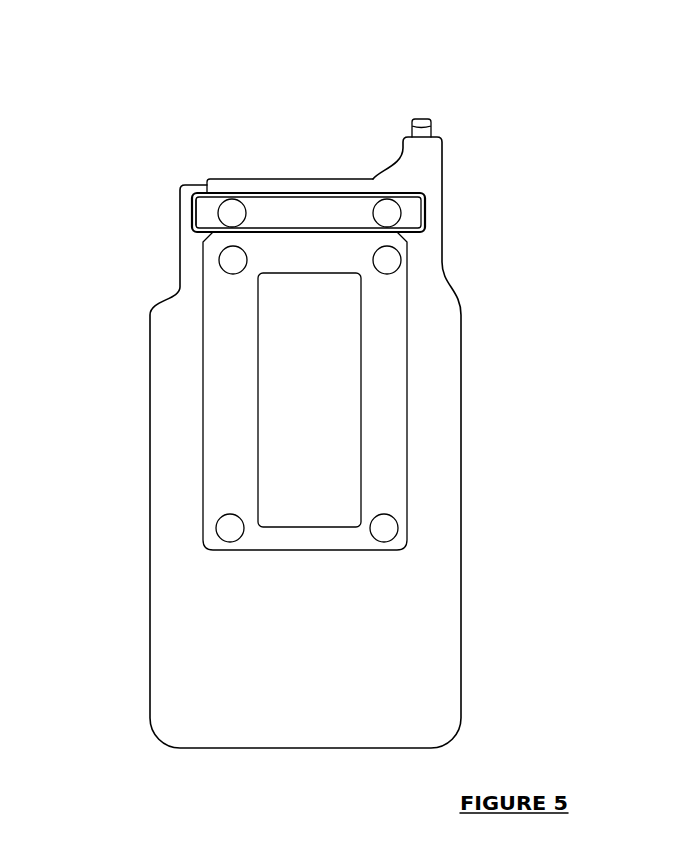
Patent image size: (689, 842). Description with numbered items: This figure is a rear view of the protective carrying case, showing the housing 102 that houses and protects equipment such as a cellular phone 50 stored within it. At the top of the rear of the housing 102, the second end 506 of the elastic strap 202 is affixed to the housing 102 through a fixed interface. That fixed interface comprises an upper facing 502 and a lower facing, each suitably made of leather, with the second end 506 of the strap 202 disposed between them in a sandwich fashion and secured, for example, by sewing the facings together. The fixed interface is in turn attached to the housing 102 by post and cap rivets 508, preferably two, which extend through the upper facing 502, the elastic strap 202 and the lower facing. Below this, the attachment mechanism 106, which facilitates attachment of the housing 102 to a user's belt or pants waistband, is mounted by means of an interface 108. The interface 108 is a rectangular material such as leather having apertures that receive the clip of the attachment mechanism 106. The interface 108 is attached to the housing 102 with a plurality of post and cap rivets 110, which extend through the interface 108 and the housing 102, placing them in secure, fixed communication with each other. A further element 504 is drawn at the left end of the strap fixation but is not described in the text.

The housing 102 is at (438, 638).
The cellular phone 50 is at (427, 160).
The second end 506 is at (489, 118).
The strap 202 is at (258, 183).
The upper facing 502 is at (297, 215).
The band end portion 504 is at (197, 220).
The post and cap rivets 508 is at (385, 215).
The interface 108 is at (397, 473).
The attachment mechanism 106 is at (338, 428).
The post and cap rivets 110 is at (387, 528).